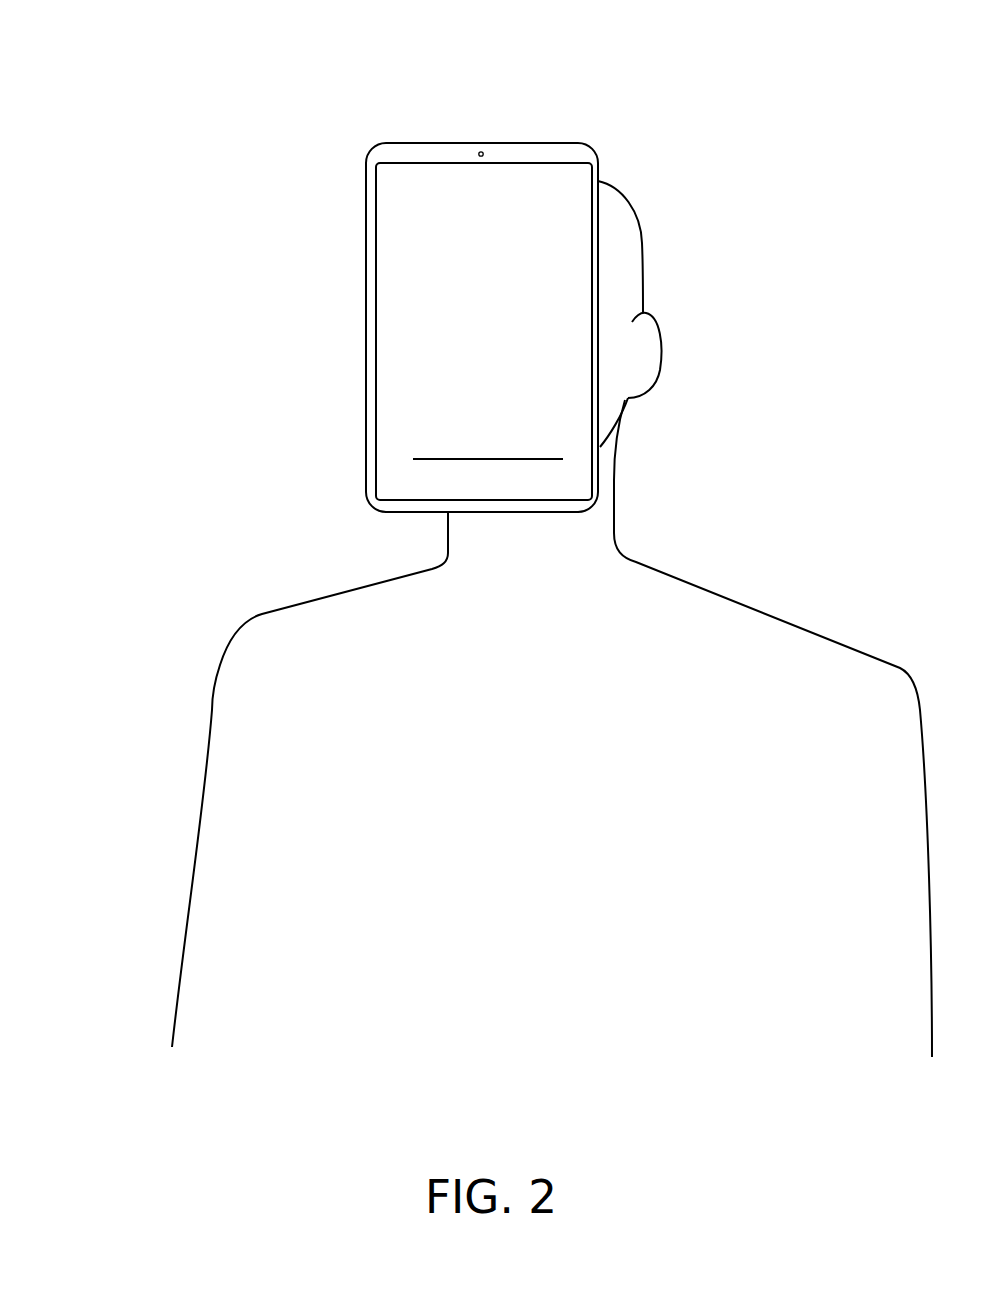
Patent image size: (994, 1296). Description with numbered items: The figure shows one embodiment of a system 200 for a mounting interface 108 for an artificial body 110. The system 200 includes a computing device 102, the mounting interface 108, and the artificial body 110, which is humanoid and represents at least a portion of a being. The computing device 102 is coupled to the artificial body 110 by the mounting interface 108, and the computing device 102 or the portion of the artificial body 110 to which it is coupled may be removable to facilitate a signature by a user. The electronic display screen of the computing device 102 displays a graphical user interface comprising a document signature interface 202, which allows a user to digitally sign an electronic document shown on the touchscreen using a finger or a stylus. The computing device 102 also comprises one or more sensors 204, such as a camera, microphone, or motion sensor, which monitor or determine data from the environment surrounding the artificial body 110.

The system 200 is at (82, 52).
The computing device 102 is at (367, 180).
The sensor 204 is at (477, 155).
The mounting interface 108 is at (366, 352).
The document signature interface 202 is at (466, 418).
The artificial body 110 is at (642, 243).